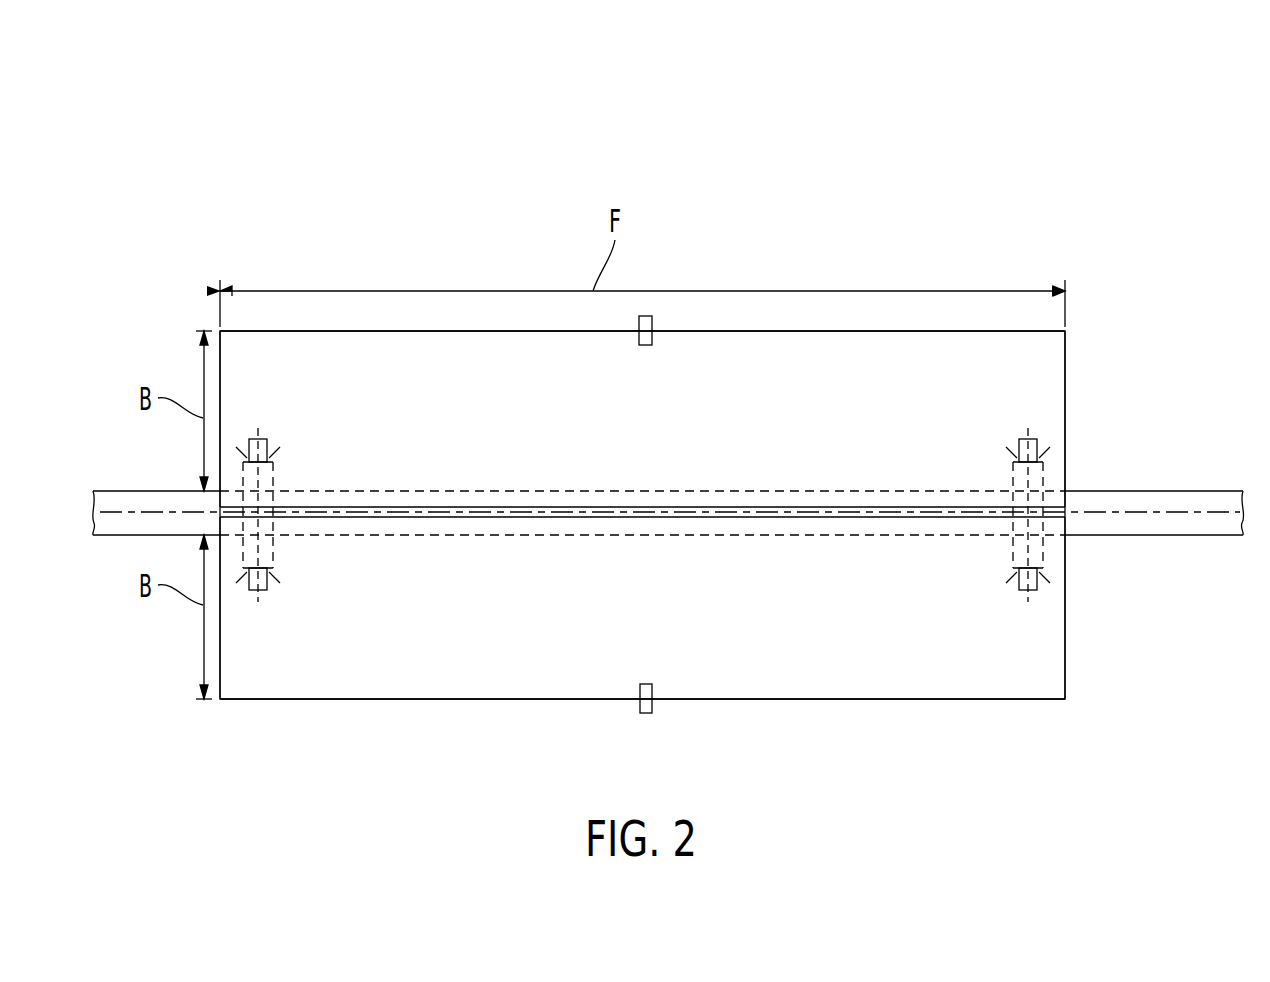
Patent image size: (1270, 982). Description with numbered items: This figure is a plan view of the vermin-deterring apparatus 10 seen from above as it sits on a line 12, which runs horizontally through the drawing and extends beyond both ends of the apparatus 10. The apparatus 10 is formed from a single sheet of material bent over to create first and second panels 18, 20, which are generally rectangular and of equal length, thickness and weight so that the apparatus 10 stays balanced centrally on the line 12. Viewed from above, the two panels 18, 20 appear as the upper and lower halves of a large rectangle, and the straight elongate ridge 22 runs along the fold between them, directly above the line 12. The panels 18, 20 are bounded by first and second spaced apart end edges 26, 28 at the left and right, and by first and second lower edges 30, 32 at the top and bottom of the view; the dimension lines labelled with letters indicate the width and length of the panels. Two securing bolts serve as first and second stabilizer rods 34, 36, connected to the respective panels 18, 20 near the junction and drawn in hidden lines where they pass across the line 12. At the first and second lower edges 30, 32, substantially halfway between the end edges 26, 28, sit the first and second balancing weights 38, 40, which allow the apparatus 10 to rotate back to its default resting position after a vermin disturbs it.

The apparatus 10 is at (1035, 138).
The line 12 is at (1148, 491).
The first panel 18 is at (922, 672).
The second panel 20 is at (830, 368).
The elongate ridge 22 is at (558, 520).
The first end edge 26 is at (219, 636).
The second end edge 28 is at (1068, 617).
The first lower edge 30 is at (410, 700).
The second lower edge 32 is at (381, 331).
The first stabilizer rod 34 is at (275, 478).
The second stabilizer rod 36 is at (1012, 477).
The first balancing weight 38 is at (645, 713).
The second balancing weight 40 is at (645, 316).